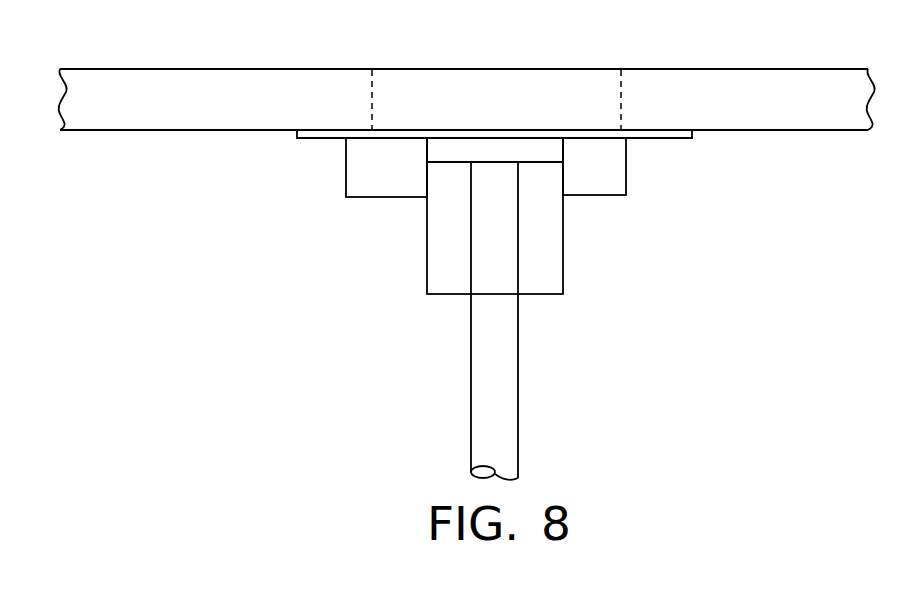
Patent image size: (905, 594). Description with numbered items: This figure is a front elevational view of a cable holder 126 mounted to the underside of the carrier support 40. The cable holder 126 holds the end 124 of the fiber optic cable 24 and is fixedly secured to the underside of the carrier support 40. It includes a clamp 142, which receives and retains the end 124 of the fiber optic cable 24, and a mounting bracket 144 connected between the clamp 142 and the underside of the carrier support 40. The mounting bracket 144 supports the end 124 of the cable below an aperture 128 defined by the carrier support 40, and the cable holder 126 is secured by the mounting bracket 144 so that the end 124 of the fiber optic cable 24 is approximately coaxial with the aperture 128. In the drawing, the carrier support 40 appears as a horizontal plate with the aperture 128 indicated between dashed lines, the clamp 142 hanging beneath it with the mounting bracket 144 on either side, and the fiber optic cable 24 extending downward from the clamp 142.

The carrier support 40 is at (234, 68).
The aperture 128 is at (571, 69).
The end of the fiber optic cable 124 is at (488, 160).
The cable holder 126 is at (507, 208).
The clamp 142 is at (425, 252).
The mounting bracket 144 is at (346, 179).
The fiber optic cable 24 is at (520, 345).